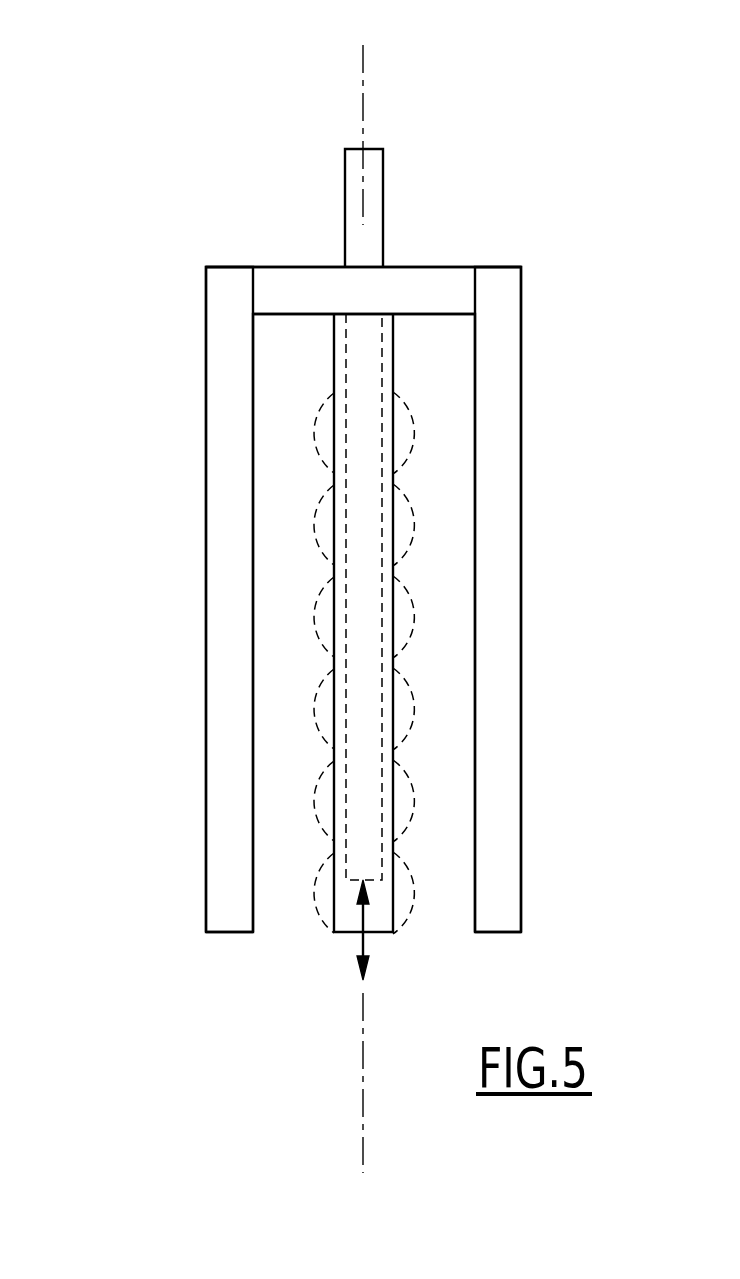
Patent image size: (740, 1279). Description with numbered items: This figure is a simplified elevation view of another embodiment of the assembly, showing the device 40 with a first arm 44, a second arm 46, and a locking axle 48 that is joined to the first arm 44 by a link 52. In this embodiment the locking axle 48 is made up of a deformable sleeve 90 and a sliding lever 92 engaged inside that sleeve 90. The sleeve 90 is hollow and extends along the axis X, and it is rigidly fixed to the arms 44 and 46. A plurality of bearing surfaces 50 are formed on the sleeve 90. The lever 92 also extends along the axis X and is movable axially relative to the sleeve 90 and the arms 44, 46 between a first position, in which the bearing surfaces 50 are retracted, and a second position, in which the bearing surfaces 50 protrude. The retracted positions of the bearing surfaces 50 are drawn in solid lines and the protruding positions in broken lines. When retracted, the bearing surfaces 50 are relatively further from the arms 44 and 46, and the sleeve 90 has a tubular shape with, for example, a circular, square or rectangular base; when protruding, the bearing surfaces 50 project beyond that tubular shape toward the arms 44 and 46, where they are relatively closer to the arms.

The axis X is at (363, 68).
The device 40 is at (190, 183).
The first arm 44 is at (500, 660).
The second arm 46 is at (228, 698).
The locking axle 48 is at (305, 230).
The bearing surfaces 50 is at (313, 535).
The link 52 is at (412, 252).
The deformable sleeve 90 is at (393, 350).
The sliding lever 92 is at (383, 192).